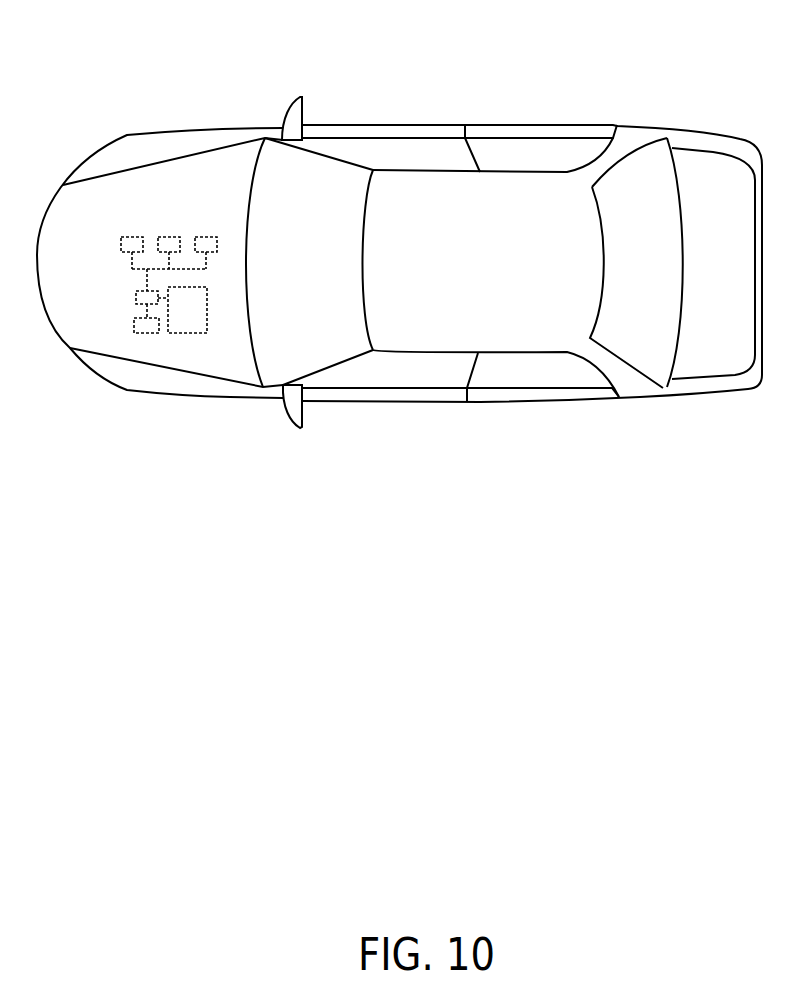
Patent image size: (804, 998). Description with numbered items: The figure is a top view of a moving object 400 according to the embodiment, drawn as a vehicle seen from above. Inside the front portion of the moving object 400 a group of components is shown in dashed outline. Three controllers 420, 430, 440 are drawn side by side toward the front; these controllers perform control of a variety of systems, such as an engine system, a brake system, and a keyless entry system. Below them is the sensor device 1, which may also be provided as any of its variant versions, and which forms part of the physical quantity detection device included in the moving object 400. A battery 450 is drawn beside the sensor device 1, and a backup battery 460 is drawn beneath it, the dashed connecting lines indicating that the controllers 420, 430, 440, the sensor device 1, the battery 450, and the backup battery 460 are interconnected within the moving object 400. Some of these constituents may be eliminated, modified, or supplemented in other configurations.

The moving object 400 is at (423, 58).
The controller 420 is at (130, 236).
The controller 430 is at (171, 236).
The controller 440 is at (209, 236).
The sensor device 1 is at (136, 294).
The battery 450 is at (195, 336).
The backup battery 460 is at (134, 327).